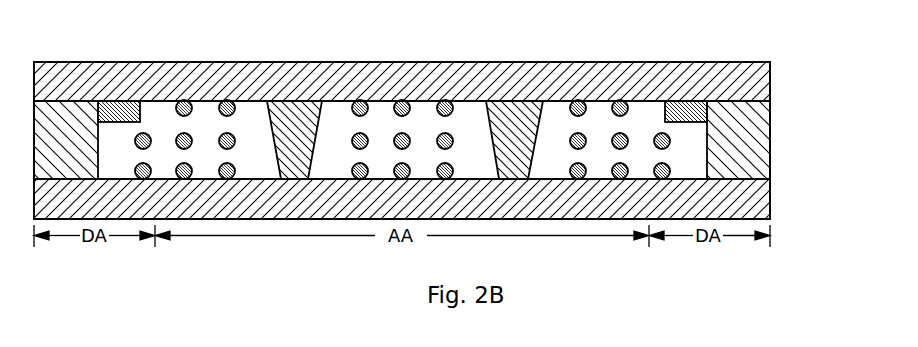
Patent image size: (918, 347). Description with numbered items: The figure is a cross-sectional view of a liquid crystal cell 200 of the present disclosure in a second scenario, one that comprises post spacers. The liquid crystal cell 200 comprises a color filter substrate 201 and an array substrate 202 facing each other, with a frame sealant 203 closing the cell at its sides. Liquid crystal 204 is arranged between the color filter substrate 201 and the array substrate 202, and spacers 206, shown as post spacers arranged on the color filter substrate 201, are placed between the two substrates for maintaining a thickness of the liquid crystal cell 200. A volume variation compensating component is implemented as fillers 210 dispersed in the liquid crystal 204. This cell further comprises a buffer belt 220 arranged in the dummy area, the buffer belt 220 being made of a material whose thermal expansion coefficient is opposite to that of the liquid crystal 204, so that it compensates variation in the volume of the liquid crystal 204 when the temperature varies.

The liquid crystal cell 200 is at (78, 46).
The color filter substrate 201 is at (430, 75).
The array substrate 202 is at (430, 193).
The frame sealant 203 is at (430, 140).
The liquid crystal 204 is at (402, 100).
The spacers 206 is at (422, 100).
The fillers 210 is at (418, 100).
The buffer belt 220 is at (402, 72).